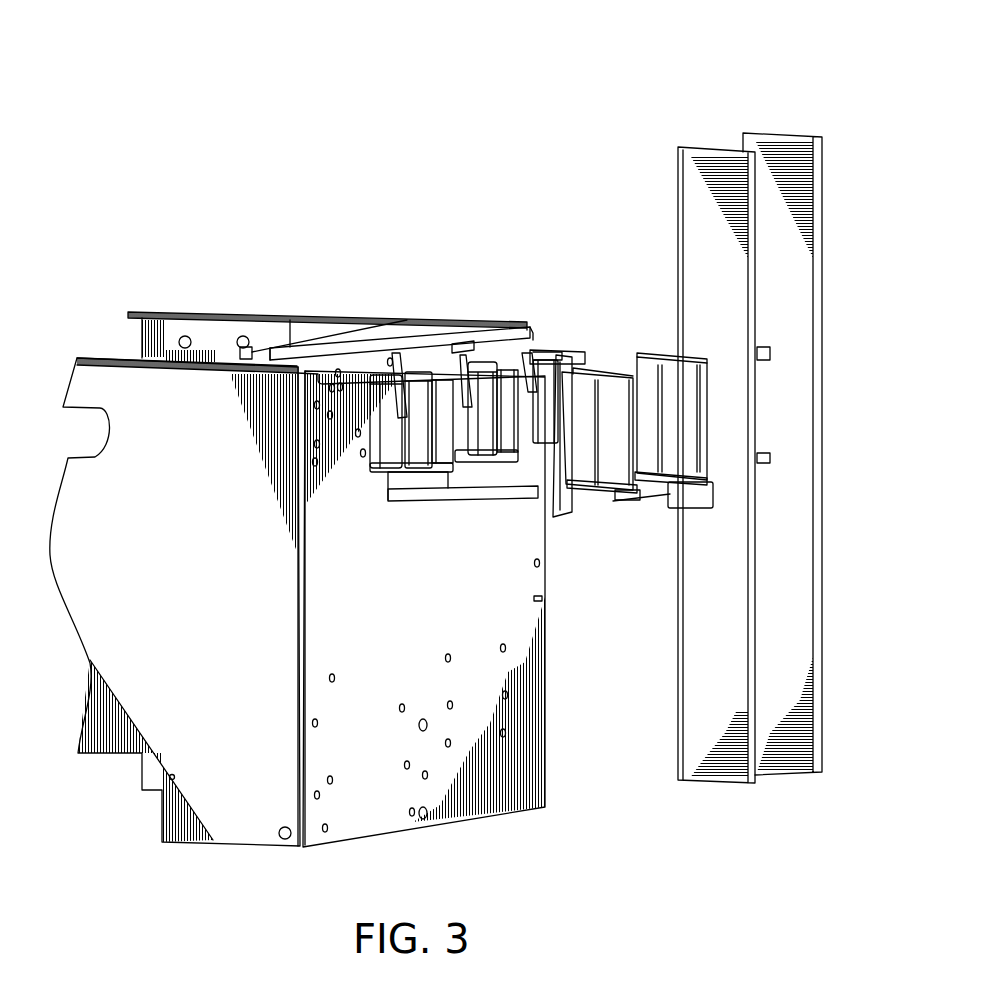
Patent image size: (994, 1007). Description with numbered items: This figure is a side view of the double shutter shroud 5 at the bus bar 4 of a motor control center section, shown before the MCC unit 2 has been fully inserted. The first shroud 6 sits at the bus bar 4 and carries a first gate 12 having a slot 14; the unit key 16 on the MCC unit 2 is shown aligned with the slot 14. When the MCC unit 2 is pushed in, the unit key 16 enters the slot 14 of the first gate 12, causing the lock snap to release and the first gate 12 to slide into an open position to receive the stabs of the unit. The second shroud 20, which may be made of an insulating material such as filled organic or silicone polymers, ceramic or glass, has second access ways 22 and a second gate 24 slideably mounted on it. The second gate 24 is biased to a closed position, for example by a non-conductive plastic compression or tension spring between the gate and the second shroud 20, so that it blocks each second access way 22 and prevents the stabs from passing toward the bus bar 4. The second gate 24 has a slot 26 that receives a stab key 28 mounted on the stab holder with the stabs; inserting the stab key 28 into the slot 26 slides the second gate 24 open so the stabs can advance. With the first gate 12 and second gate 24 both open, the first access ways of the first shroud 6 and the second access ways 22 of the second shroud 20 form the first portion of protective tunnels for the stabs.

The MCC unit 2 is at (178, 857).
The bus bar 4 is at (748, 96).
The double shutter shroud 5 is at (633, 534).
The first shroud 6 is at (621, 471).
The first gate 12 is at (577, 510).
The slot 14 is at (660, 536).
The unit key 16 is at (503, 495).
The second shroud 20 is at (377, 473).
The second access way 22 is at (447, 435).
The second gate 24 is at (401, 298).
The slot 26 is at (458, 343).
The stab key 28 is at (322, 347).